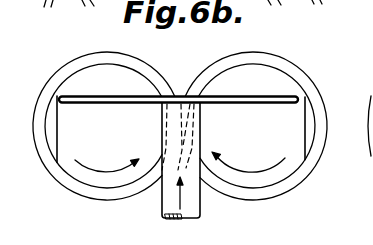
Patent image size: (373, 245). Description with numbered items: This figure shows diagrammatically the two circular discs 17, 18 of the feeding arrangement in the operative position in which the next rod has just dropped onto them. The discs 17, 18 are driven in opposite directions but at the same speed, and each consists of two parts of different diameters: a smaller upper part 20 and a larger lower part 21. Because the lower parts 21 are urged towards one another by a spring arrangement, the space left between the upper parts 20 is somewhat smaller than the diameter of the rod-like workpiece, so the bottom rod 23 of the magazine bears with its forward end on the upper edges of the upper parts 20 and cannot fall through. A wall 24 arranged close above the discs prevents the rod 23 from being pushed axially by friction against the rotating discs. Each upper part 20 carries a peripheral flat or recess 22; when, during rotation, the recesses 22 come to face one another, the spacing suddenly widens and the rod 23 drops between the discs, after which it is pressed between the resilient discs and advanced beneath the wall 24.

The circular disc 17 is at (110, 200).
The circular disc 18 is at (295, 188).
The upper part 20 is at (220, 88).
The lower part 21 is at (70, 68).
The recess 22 is at (53, 106).
The bottom rod 23 is at (199, 208).
The wall 24 is at (277, 97).